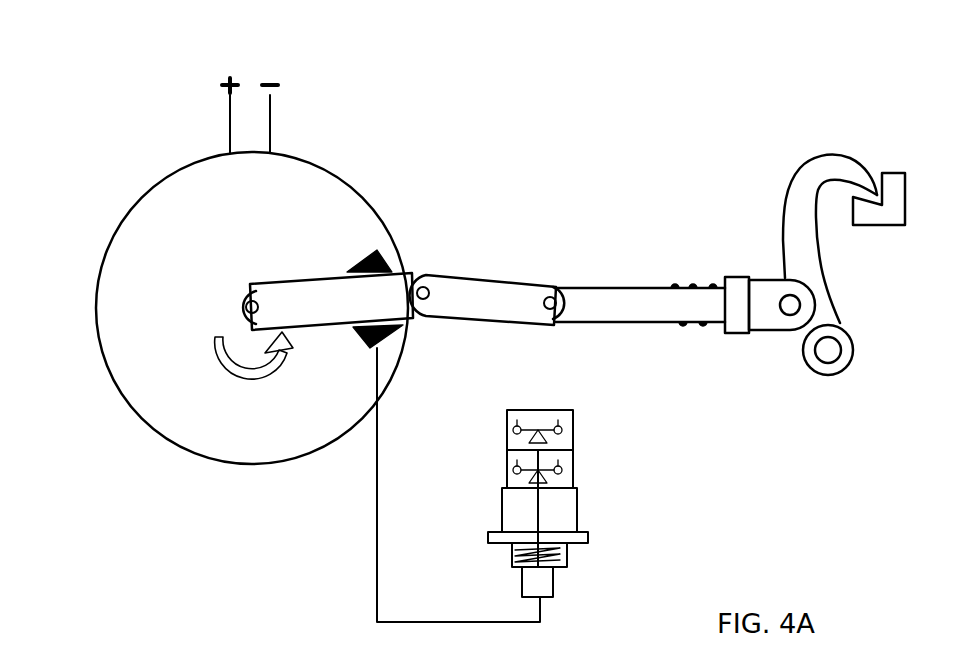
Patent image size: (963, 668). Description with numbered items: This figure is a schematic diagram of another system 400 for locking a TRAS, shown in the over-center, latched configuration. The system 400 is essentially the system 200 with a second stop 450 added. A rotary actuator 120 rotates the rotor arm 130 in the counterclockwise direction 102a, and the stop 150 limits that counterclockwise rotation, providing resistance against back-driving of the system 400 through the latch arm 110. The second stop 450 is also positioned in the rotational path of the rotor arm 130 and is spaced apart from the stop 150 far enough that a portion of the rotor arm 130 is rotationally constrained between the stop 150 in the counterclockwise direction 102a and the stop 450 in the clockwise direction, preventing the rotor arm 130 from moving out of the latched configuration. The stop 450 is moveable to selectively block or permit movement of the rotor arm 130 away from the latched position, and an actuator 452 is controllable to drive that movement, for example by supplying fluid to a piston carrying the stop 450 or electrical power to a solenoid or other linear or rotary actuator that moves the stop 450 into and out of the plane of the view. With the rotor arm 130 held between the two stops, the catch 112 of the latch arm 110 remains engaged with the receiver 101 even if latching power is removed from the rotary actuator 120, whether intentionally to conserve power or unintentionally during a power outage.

The system 400 is at (90, 69).
The system 200 is at (126, 131).
The rotary actuator 120 is at (118, 228).
The rotor arm 130 is at (295, 280).
The stop 150 is at (368, 254).
The second stop 450 is at (366, 337).
The counterclockwise direction 102a is at (222, 360).
The actuator 452 is at (578, 508).
The latch arm 110 is at (782, 218).
The catch 112 is at (860, 162).
The receiver 101 is at (904, 225).